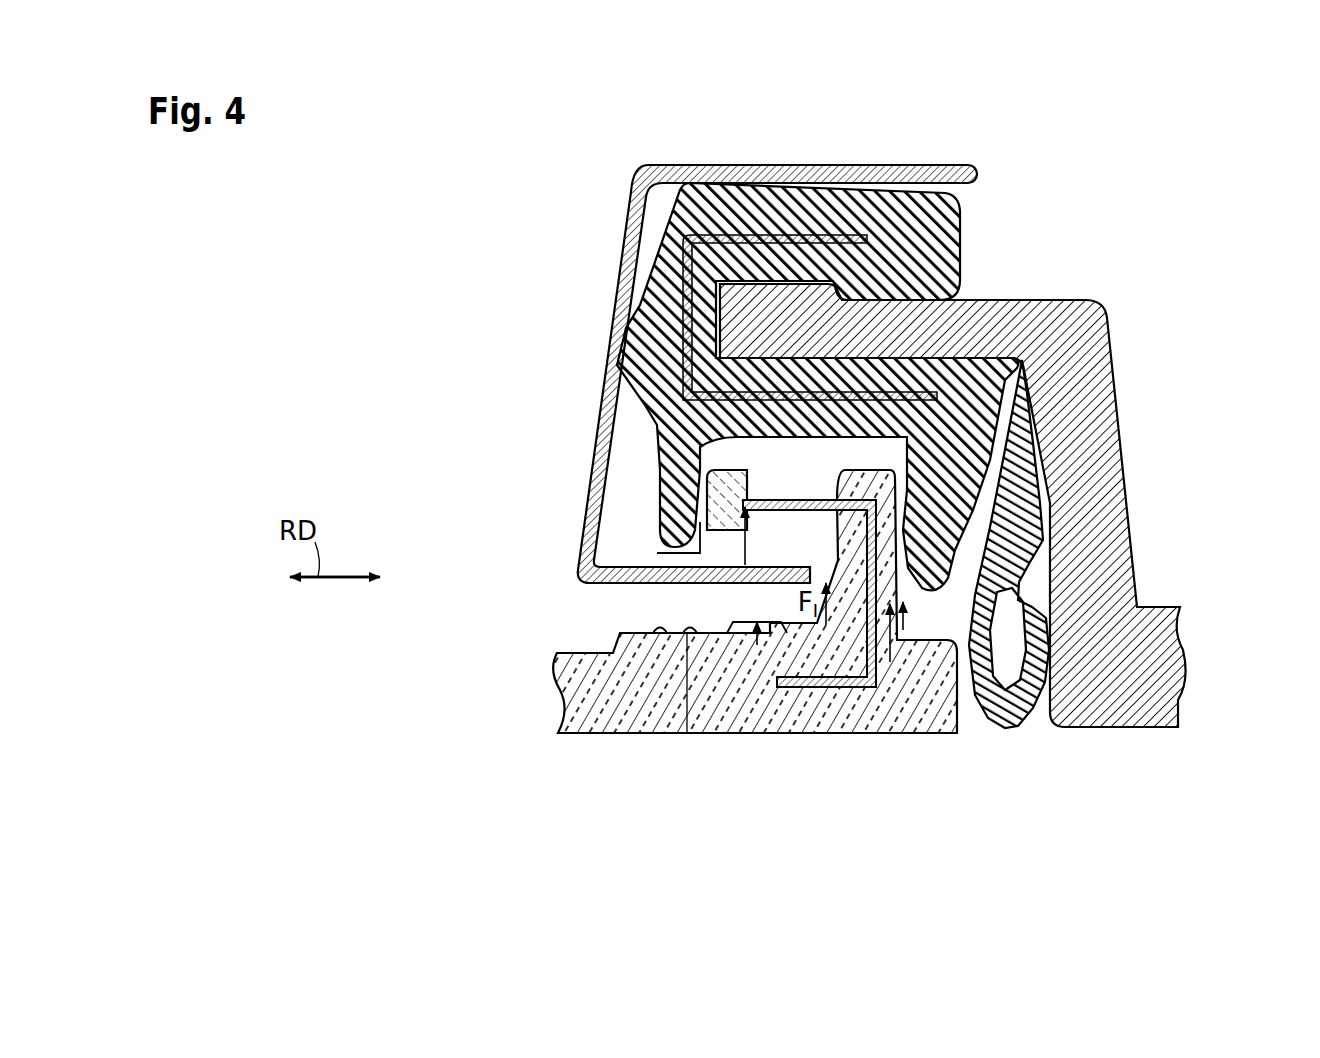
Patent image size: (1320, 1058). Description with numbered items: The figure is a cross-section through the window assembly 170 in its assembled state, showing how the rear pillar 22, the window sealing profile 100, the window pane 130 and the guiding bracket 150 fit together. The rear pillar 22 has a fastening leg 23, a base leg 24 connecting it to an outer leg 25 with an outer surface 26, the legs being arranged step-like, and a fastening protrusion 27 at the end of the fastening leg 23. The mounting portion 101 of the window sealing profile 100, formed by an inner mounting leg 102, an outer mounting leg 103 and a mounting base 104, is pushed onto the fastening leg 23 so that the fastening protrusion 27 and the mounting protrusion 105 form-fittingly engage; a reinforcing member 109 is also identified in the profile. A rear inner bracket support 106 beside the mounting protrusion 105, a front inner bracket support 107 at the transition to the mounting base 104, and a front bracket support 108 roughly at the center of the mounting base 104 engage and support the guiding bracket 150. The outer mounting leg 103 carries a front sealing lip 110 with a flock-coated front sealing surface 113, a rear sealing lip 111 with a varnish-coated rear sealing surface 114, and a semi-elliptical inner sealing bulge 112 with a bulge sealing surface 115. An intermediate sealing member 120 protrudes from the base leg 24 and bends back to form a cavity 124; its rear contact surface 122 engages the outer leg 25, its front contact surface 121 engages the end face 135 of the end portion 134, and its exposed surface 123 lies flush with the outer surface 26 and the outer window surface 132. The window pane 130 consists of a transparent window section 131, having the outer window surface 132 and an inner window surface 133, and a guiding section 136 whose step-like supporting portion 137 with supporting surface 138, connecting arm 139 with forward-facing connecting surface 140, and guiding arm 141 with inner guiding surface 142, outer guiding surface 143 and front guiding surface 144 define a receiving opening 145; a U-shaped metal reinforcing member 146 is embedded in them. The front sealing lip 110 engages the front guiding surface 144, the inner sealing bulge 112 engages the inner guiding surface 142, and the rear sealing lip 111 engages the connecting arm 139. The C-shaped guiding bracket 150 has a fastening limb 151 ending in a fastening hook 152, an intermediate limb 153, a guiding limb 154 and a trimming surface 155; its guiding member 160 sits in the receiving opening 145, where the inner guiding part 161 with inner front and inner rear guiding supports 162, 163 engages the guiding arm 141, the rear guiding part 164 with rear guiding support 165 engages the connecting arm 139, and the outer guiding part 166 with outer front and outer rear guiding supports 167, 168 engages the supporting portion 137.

The rear pillar 22 is at (1120, 366).
The fastening leg 23 is at (1008, 335).
The base leg 24 is at (1090, 442).
The outer leg 25 is at (1132, 668).
The outer surface 26 is at (1140, 728).
The fastening protrusion 27 is at (738, 297).
The window sealing profile 100 is at (968, 216).
The mounting portion 101 is at (660, 244).
The inner mounting leg 102 is at (770, 215).
The outer mounting leg 103 is at (715, 355).
The mounting base 104 is at (683, 293).
The mounting protrusion 105 is at (848, 282).
The rear inner bracket support 106 is at (950, 188).
The front inner bracket support 107 is at (690, 184).
The front bracket support 108 is at (633, 326).
The reinforcing member 109 is at (727, 413).
The front sealing lip 110 is at (675, 487).
The rear sealing lip 111 is at (918, 525).
The inner sealing bulge 112 is at (778, 463).
The front sealing surface 113 is at (668, 518).
The rear sealing surface 114 is at (920, 493).
The bulge sealing surface 115 is at (765, 468).
The intermediate sealing member 120 is at (1008, 524).
The front contact surface 121 is at (969, 727).
The rear contact surface 122 is at (1058, 727).
The exposed surface 123 is at (1008, 727).
The cavity 124 is at (1032, 582).
The window pane 130 is at (553, 690).
The window section 131 is at (583, 713).
The outer window surface 132 is at (627, 735).
The inner window surface 133 is at (640, 645).
The end portion 134 is at (937, 735).
The end face 135 is at (960, 720).
The guiding section 136 is at (890, 732).
The supporting portion 137 is at (622, 632).
The supporting surface 138 is at (648, 683).
The connecting arm 139 is at (918, 686).
The connecting surface 140 is at (802, 578).
The guiding arm 141 is at (860, 497).
The inner guiding surface 142 is at (705, 558).
The outer guiding surface 143 is at (837, 440).
The front guiding surface 144 is at (700, 500).
The receiving opening 145 is at (676, 610).
The reinforcing member 146 is at (827, 690).
The guiding bracket 150 is at (620, 185).
The fastening limb 151 is at (923, 193).
The fastening hook 152 is at (978, 180).
The intermediate limb 153 is at (610, 315).
The guiding limb 154 is at (632, 577).
The trimming surface 155 is at (795, 165).
The guiding member 160 is at (732, 616).
The inner guiding part 161 is at (748, 540).
The inner front guiding support 162 is at (732, 565).
The inner rear guiding support 163 is at (790, 525).
The rear guiding part 164 is at (816, 648).
The rear guiding support 165 is at (855, 487).
The outer guiding part 166 is at (760, 633).
The outer front guiding support 167 is at (687, 735).
The outer rear guiding support 168 is at (768, 690).
The window assembly 170 is at (405, 395).